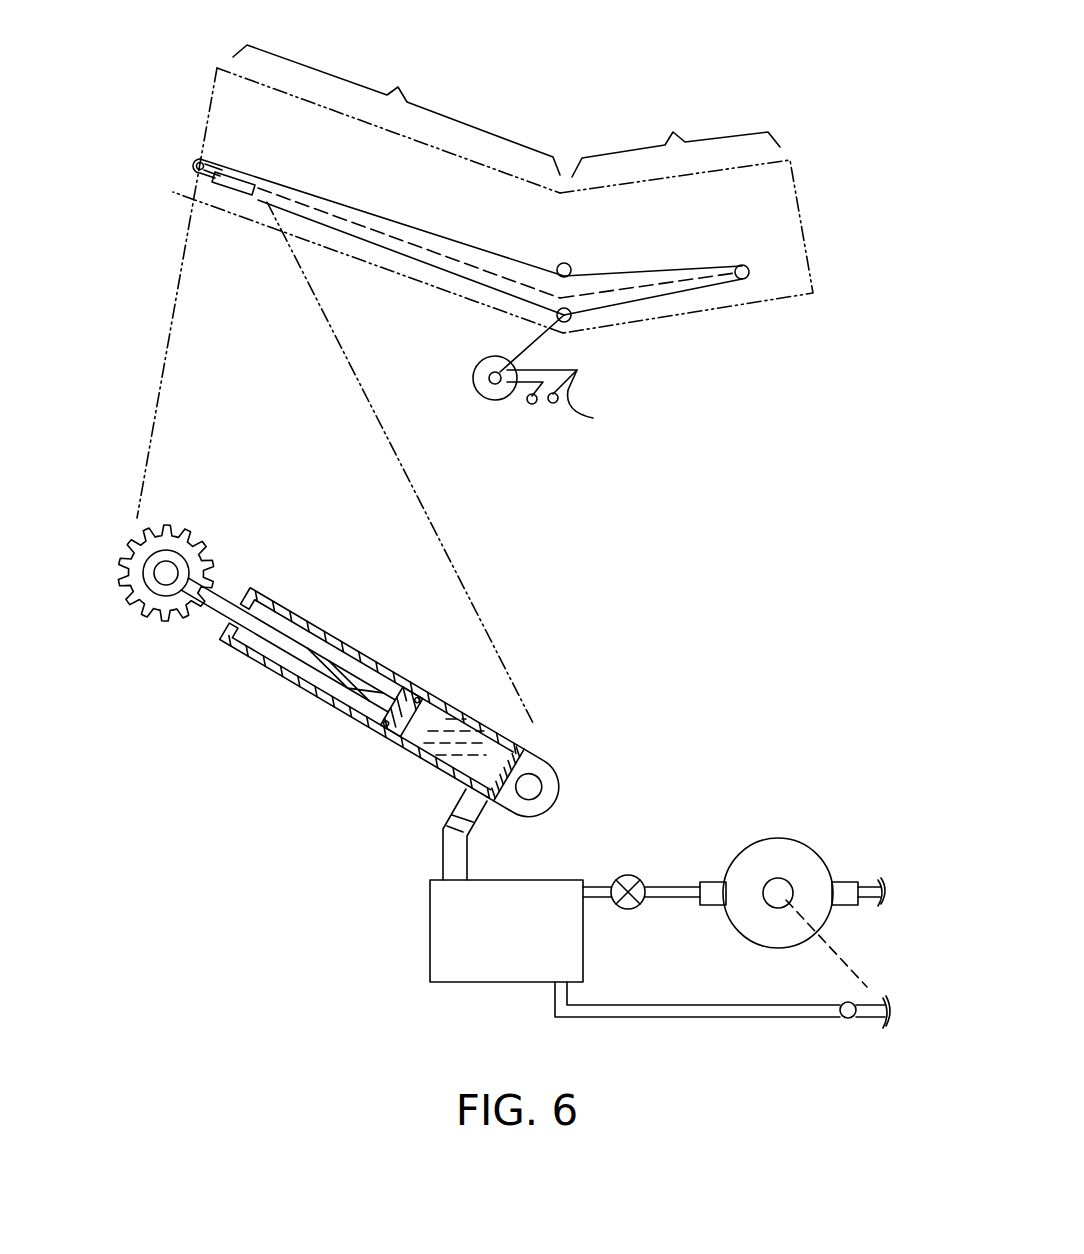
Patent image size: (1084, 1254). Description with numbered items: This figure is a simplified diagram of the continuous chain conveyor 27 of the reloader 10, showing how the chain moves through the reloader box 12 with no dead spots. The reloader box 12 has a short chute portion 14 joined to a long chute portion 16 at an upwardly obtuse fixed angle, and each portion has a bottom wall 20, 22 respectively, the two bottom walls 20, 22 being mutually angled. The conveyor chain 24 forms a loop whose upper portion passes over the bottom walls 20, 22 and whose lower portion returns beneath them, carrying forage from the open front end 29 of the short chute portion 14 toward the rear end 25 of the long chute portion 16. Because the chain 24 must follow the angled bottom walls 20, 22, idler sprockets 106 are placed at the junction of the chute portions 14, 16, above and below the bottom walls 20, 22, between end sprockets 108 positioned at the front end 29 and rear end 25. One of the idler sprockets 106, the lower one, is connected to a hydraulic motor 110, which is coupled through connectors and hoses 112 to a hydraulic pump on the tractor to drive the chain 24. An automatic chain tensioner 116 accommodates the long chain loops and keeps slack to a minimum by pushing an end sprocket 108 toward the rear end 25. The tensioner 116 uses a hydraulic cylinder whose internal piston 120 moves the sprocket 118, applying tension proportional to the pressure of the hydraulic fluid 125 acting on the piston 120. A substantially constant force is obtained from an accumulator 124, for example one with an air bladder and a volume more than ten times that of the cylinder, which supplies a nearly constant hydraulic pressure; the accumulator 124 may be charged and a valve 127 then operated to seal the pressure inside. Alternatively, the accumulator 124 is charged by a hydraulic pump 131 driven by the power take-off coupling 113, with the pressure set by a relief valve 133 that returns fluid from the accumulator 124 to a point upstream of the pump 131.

The reloader 10 is at (797, 108).
The reloader box 12 is at (193, 78).
The short chute portion 14 is at (676, 137).
The long chute portion 16 is at (396, 110).
The bottom wall 20 is at (672, 282).
The bottom wall 22 is at (393, 240).
The conveyor chain 24 is at (430, 232).
The rear end 25 is at (147, 140).
The chain conveyor 27 is at (706, 228).
The front end 29 is at (826, 182).
The idler sprockets 106 is at (568, 312).
The end sprockets 108 is at (195, 165).
The hydraulic motor 110 is at (497, 400).
The connectors and hoses 112 is at (573, 402).
The power take-off coupling 113 is at (835, 950).
The automatic chain tensioner 116 is at (232, 193).
The sprocket 118 is at (370, 693).
The piston 120 is at (298, 650).
The accumulator 124 is at (523, 880).
The hydraulic fluid 125 is at (490, 759).
The valve 127 is at (640, 905).
The hydraulic pump 131 is at (800, 847).
The relief valve 133 is at (846, 1020).